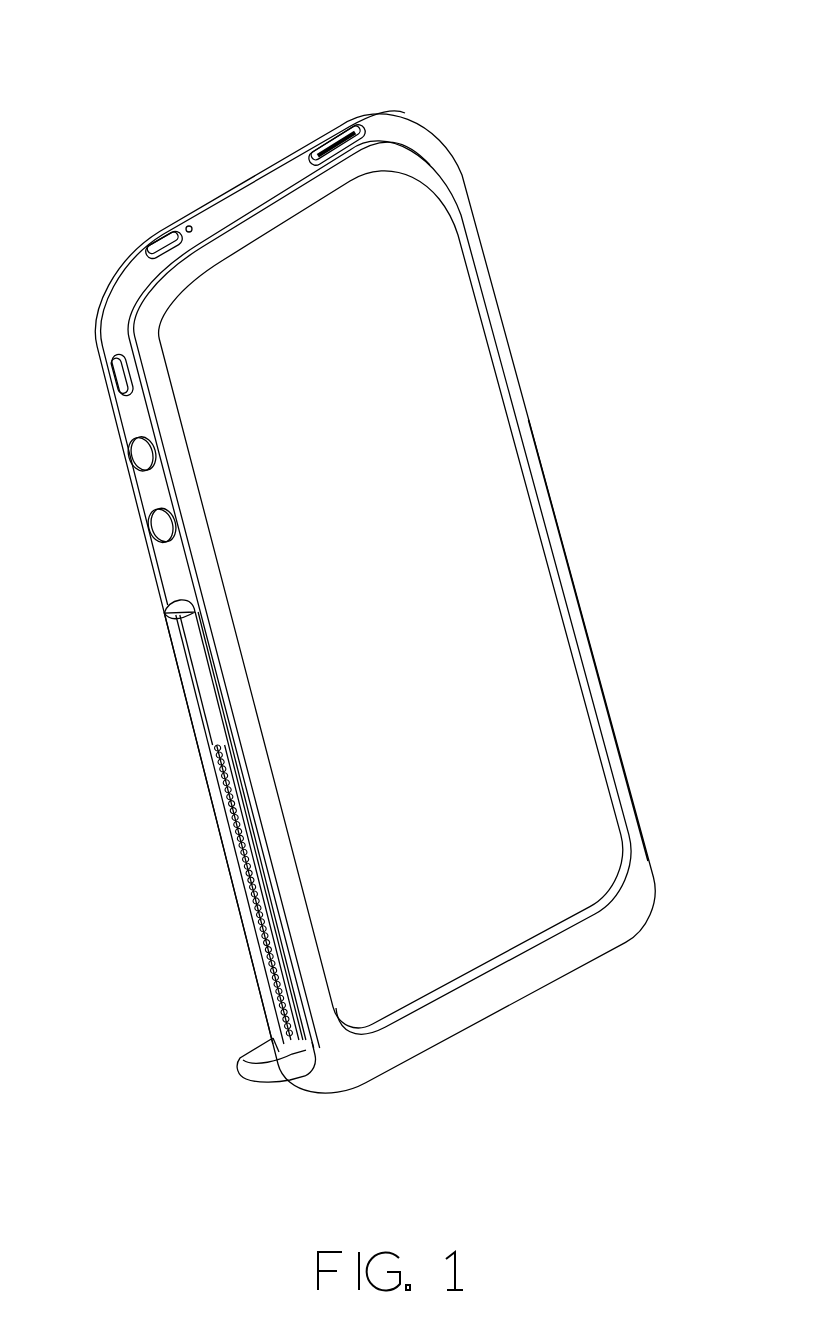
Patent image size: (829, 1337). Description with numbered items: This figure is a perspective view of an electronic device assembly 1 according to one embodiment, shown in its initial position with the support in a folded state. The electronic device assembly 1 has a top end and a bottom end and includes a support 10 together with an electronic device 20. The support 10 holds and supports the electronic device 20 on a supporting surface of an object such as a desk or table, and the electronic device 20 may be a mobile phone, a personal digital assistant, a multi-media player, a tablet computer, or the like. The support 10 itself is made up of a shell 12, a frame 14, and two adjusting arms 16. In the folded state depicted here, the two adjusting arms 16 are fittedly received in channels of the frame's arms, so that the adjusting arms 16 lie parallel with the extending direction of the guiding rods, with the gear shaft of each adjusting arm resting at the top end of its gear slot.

The electronic device assembly 1 is at (381, 35).
The support 10 is at (168, 776).
The shell 12 is at (530, 968).
The frame 14 is at (273, 1070).
The adjusting arms 16 is at (268, 930).
The electronic device 20 is at (578, 843).